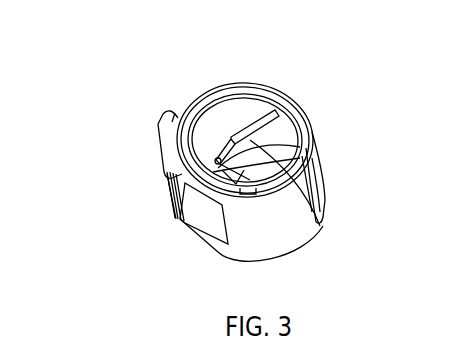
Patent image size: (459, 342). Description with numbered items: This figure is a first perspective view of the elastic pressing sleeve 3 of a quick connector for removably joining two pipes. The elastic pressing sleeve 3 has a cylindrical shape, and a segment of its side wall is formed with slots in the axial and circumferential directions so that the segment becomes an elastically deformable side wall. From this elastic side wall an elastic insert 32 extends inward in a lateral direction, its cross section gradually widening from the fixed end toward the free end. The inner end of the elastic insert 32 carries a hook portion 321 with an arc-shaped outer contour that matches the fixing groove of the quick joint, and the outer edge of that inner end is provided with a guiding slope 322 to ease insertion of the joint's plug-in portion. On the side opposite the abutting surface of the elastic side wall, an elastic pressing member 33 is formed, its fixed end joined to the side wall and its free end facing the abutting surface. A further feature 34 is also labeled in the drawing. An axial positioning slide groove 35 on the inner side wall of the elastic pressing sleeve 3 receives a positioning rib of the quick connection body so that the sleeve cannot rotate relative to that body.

The elastic pressing sleeve 3 is at (301, 72).
The elastic insert 32 is at (244, 110).
The hook portion 321 is at (217, 157).
The guiding slope 322 is at (322, 228).
The elastic pressing member 33 is at (193, 203).
The hook tab 34 is at (168, 138).
The positioning slide groove 35 is at (331, 341).